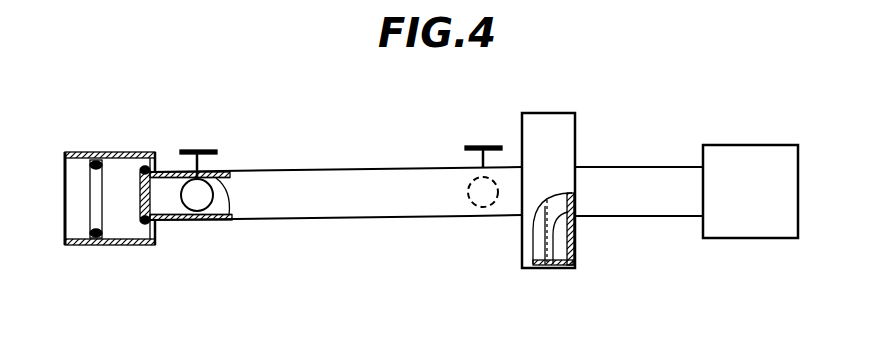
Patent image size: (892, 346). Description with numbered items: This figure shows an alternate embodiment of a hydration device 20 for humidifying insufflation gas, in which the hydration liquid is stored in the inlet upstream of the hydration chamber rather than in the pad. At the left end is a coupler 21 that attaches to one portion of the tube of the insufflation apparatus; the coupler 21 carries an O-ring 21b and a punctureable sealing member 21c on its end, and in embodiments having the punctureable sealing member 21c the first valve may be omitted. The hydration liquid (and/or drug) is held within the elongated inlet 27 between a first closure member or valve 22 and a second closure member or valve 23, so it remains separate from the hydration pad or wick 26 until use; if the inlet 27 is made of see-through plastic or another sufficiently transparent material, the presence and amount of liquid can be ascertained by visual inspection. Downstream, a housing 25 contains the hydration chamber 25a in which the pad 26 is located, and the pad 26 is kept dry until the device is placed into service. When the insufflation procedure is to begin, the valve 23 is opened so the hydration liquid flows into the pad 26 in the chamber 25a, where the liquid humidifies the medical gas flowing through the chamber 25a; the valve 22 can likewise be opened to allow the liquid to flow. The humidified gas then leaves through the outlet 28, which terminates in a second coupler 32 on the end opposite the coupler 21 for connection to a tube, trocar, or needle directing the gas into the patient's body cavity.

The hydration device 20 is at (407, 140).
The coupler 21 is at (108, 152).
The O-ring 21b is at (110, 245).
The punctureable sealing member 21c is at (142, 245).
The first closure member or valve 22 is at (216, 178).
The second closure member or valve 23 is at (488, 143).
The housing 25 is at (550, 113).
The hydration chamber 25a is at (572, 240).
The hydration pad or wick 26 is at (548, 268).
The inlet 27 is at (503, 217).
The outlet 28 is at (627, 167).
The coupler 32 is at (732, 238).